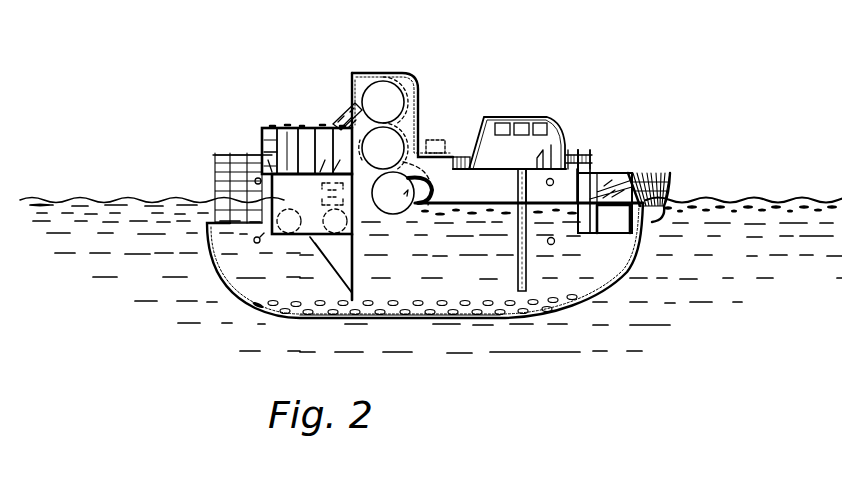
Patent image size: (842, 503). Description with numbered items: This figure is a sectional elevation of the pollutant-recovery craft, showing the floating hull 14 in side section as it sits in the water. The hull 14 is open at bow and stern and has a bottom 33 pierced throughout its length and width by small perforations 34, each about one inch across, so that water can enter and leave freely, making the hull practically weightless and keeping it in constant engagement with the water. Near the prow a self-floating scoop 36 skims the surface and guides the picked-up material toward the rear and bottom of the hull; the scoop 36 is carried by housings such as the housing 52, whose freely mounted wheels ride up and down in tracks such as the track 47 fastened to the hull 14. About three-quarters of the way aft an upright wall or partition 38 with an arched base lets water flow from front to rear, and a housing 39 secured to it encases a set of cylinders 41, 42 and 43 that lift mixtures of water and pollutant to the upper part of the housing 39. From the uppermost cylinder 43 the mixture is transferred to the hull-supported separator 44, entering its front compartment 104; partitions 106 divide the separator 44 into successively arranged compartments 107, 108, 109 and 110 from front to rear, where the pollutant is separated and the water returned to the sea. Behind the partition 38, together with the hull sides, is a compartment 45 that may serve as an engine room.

The hull 14 is at (605, 267).
The bottom 33 is at (500, 316).
The perforations 34 is at (430, 314).
The self-floating scoop 36 is at (612, 188).
The upright wall or partition 38 is at (357, 110).
The housing 39 is at (419, 90).
The cylinder 41 is at (389, 205).
The cylinder 42 is at (392, 140).
The cylinder 43 is at (383, 94).
The separator 44 is at (262, 127).
The compartment 45 is at (273, 203).
The track 47 is at (580, 183).
The housing 52 is at (551, 207).
The front compartment 104 is at (322, 187).
The partitions 106 is at (270, 165).
The compartment 107 is at (320, 183).
The compartment 108 is at (313, 128).
The compartment 109 is at (288, 136).
The compartment 110 is at (268, 140).